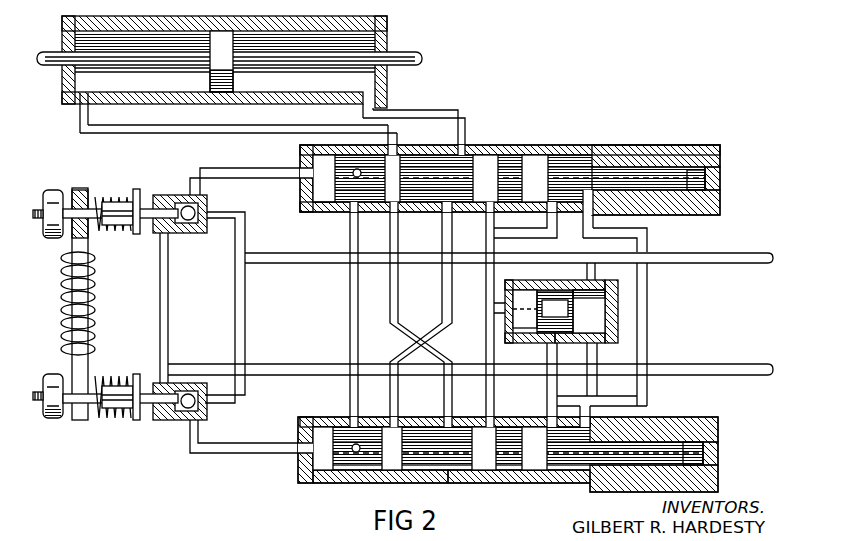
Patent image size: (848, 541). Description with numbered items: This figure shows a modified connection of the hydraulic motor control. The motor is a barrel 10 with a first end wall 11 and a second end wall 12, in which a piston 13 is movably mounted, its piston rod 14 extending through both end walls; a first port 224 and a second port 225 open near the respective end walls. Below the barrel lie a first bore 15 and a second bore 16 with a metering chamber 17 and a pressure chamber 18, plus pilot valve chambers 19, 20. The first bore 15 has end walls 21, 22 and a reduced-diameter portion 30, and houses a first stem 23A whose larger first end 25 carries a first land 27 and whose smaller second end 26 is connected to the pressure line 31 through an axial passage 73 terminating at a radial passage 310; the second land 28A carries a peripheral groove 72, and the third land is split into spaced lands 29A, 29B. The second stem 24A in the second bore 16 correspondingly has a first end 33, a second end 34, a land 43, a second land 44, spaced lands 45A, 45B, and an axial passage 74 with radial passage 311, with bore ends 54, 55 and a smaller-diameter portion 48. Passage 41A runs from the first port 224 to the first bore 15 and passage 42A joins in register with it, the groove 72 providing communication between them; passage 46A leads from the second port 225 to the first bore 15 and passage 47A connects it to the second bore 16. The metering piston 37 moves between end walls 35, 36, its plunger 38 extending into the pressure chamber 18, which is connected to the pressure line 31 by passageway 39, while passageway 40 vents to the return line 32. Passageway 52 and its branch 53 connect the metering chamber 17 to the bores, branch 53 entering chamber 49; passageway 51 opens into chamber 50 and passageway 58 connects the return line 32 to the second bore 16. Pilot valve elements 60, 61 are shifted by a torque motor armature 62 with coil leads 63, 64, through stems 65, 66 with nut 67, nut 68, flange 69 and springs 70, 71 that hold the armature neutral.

The barrel 10 is at (200, 15).
The first end wall 11 is at (62, 20).
The second end wall 12 is at (388, 30).
The piston 13 is at (221, 61).
The piston rod 14 is at (423, 64).
The first bore 15 is at (667, 141).
The second bore 16 is at (723, 416).
The metering chamber 17 is at (503, 282).
The pressure chamber 18 is at (610, 333).
The first pilot valve chamber 19 is at (207, 196).
The second pilot valve chamber 20 is at (206, 419).
The first end wall of first bore 21 is at (300, 147).
The second end wall of first bore 22 is at (721, 157).
The first stem 23A is at (471, 157).
The second stem 24A is at (441, 471).
The first end of first stem 25 is at (313, 163).
The second end of first stem 26 is at (690, 171).
The first land 27 is at (344, 200).
The second land 28A is at (380, 153).
The third land portion 29A is at (536, 167).
The third land portion 29B is at (600, 141).
The reduced-diameter portion 30 is at (668, 146).
The pressure line 31 is at (747, 256).
The return line 32 is at (747, 366).
The first end of second stem 33 is at (300, 433).
The second end of second stem 34 is at (704, 460).
The first end wall of metering chamber 35 is at (516, 334).
The second end wall of metering chamber 36 is at (544, 290).
The metering piston 37 is at (529, 300).
The plunger 38 is at (555, 312).
The passageway 39 is at (597, 273).
The passageway 40 is at (562, 343).
The passage 41A is at (80, 128).
The passage 42A is at (397, 323).
The spool land 43 is at (333, 472).
The second land of second stem 44 is at (401, 472).
The third land portion 45A is at (488, 465).
The third land portion 45B is at (533, 461).
The passage 46A is at (412, 112).
The passage 47A is at (447, 323).
The smaller-diameter portion of second bore 48 is at (607, 494).
The first bore chamber 49 is at (595, 165).
The second bore chamber 50 is at (577, 474).
The passageway 51 is at (647, 313).
The passageway 52 is at (486, 352).
The branch 53 is at (542, 238).
The first end of second bore 54 is at (299, 476).
The second end of second bore 55 is at (720, 433).
The passageway 58 is at (640, 406).
The first pilot valve element 60 is at (192, 224).
The second pilot valve element 61 is at (186, 408).
The armature 62 is at (80, 190).
The coil lead 63 is at (70, 352).
The coil lead 64 is at (46, 272).
The stem 65 is at (33, 208).
The stem 66 is at (34, 404).
The nut 67 is at (52, 190).
The nut 68 is at (48, 418).
The flange 69 is at (137, 189).
The coiled spring 70 is at (110, 192).
The spring 71 is at (108, 420).
The peripheral groove 72 is at (394, 157).
The axial passage 73 is at (608, 173).
The axial passage 74 is at (665, 450).
The first port 224 is at (84, 97).
The second port 225 is at (364, 102).
The radial passage 310 is at (354, 176).
The radial passage 311 is at (357, 453).